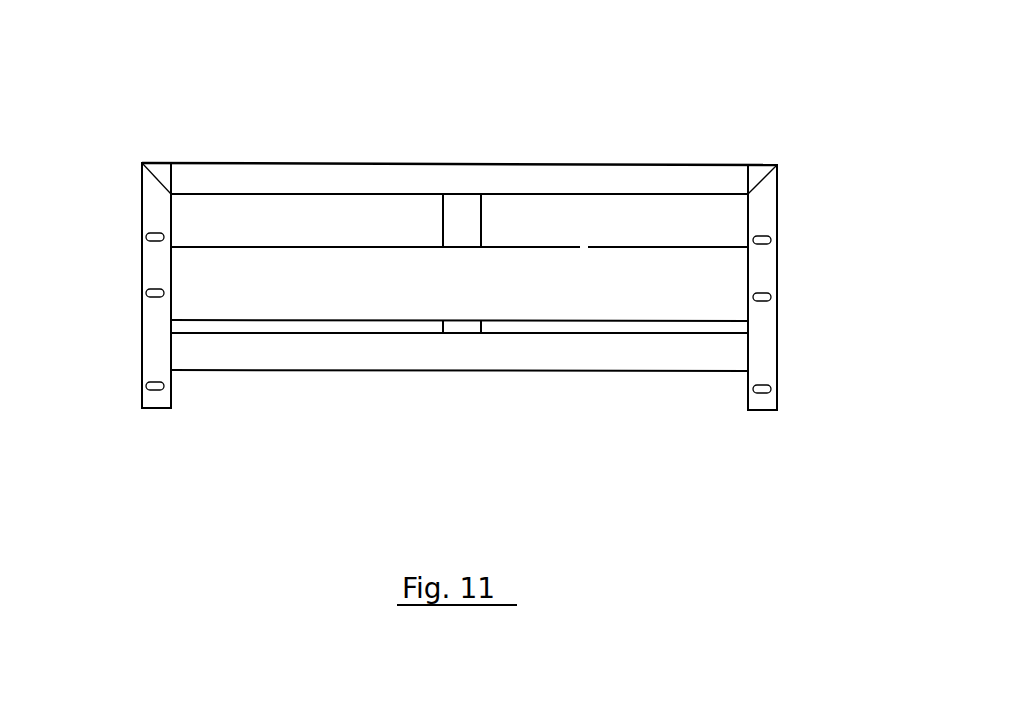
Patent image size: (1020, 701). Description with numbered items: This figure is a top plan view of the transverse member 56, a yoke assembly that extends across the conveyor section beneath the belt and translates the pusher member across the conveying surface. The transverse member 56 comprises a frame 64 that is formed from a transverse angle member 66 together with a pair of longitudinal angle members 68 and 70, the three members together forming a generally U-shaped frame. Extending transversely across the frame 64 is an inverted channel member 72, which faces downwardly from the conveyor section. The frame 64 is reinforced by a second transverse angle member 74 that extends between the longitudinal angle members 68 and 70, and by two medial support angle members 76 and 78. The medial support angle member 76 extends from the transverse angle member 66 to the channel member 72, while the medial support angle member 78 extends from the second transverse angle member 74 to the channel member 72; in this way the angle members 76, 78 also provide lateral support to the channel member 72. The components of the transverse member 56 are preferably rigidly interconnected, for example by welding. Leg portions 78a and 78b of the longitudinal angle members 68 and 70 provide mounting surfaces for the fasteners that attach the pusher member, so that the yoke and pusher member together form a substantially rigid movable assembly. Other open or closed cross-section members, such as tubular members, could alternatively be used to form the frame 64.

The transverse member 56 is at (452, 106).
The frame 64 is at (583, 157).
The transverse angle member 66 is at (343, 180).
The longitudinal angle member 68 is at (141, 285).
The longitudinal angle member 70 is at (768, 277).
The channel member 72 is at (269, 305).
The second transverse angle member 74 is at (590, 357).
The medial support angle member 76 is at (481, 222).
The medial support angle member 78 is at (481, 333).
The leg portion 78a is at (172, 222).
The leg portion 78b is at (747, 222).